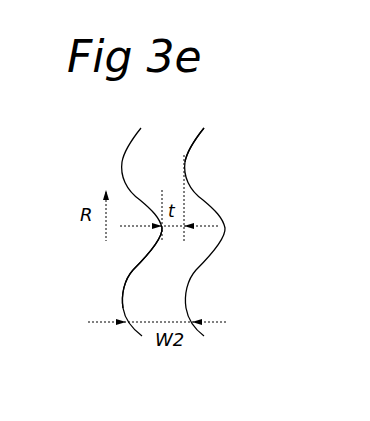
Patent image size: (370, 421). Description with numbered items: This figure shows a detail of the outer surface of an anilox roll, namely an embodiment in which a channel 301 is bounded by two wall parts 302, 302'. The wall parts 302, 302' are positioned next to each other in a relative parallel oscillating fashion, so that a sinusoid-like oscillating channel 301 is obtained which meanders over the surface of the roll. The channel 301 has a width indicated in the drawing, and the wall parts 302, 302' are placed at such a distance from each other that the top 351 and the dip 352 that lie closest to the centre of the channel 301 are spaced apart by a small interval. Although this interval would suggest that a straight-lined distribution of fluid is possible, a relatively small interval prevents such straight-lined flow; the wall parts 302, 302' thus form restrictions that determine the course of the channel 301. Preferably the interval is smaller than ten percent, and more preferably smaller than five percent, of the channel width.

The channel 301 is at (156, 298).
The wall part 302 is at (238, 232).
The wall part 302' is at (107, 229).
The top 351 is at (186, 162).
The dip 352 is at (158, 234).